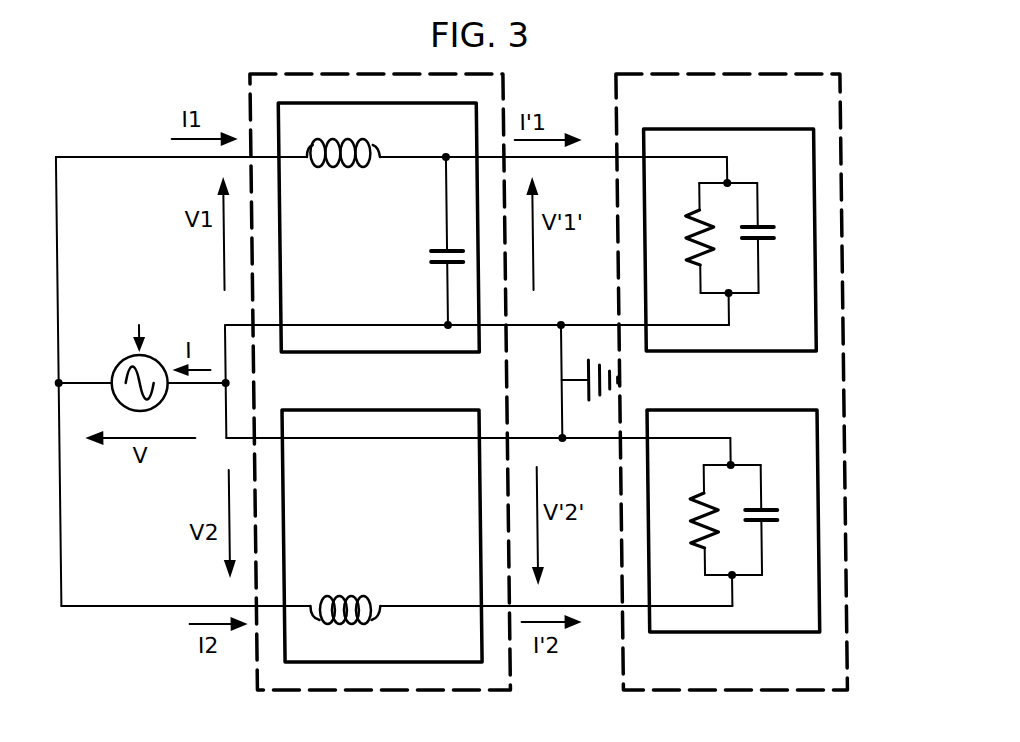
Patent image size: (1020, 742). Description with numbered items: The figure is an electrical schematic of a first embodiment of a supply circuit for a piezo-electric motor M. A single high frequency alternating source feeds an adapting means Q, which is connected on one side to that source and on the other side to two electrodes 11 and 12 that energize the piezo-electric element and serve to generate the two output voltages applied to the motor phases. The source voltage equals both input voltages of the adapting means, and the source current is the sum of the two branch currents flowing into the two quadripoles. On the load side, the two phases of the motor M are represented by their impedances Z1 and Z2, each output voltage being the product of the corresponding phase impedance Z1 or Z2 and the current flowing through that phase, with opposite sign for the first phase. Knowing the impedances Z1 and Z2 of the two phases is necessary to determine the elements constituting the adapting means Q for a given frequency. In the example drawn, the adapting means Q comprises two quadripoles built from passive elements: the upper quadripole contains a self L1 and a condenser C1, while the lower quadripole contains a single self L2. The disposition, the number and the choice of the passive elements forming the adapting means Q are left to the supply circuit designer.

The electrode 11 is at (591, 150).
The electrode 12 is at (570, 438).
The adapting means Q is at (277, 74).
The piezo-electric motor M is at (839, 77).
The impedance of phase 1 Z1 is at (812, 143).
The impedance of phase 2 Z2 is at (812, 428).
The self L1 is at (336, 141).
The self L2 is at (344, 624).
The condenser C1 is at (432, 249).